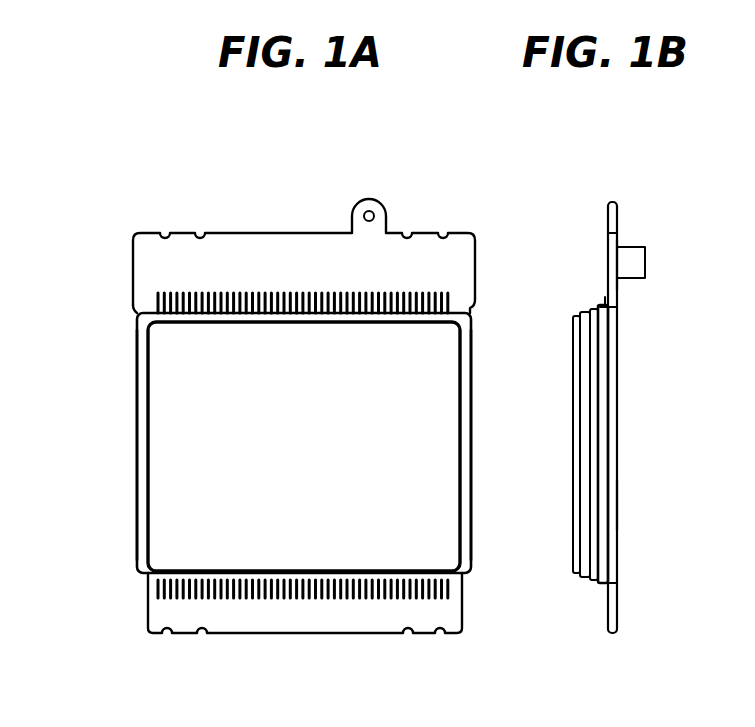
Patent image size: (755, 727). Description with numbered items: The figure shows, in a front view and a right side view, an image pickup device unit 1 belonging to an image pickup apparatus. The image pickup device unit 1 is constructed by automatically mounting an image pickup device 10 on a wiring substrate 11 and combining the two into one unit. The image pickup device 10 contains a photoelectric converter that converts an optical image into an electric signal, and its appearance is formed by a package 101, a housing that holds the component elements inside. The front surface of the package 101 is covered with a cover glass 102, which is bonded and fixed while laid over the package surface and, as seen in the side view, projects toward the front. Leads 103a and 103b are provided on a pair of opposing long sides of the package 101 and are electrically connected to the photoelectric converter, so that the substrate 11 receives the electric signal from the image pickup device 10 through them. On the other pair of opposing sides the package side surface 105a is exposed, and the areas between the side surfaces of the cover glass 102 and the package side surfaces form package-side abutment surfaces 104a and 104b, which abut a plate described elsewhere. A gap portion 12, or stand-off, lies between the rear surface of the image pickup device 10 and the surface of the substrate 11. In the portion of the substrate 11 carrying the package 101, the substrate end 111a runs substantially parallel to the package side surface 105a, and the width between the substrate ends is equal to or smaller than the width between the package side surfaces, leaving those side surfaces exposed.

In FIG. 1A, the image pickup device unit 1 is at (297, 220).
In FIG. 1A, the image pickup device 10 is at (131, 370).
In FIG. 1A, the wiring substrate 11 is at (458, 253).
In FIG. 1B, the gap portion (stand-off) 12 is at (607, 440).
In FIG. 1A, the package 101 is at (473, 340).
In FIG. 1A, the cover glass 102 is at (170, 541).
In FIG. 1B, the cover glass 102 is at (573, 452).
In FIG. 1A, the lead 103a is at (221, 302).
In FIG. 1B, the lead 103a is at (617, 302).
In FIG. 1A, the lead 103b is at (420, 598).
In FIG. 1B, the lead 103b is at (612, 585).
In FIG. 1A, the package-side abutment surface 104a is at (468, 480).
In FIG. 1A, the package-side abutment surface 104b is at (138, 460).
In FIG. 1B, the package side surface 105a is at (754, 362).
In FIG. 1B, the substrate end 111a is at (754, 508).